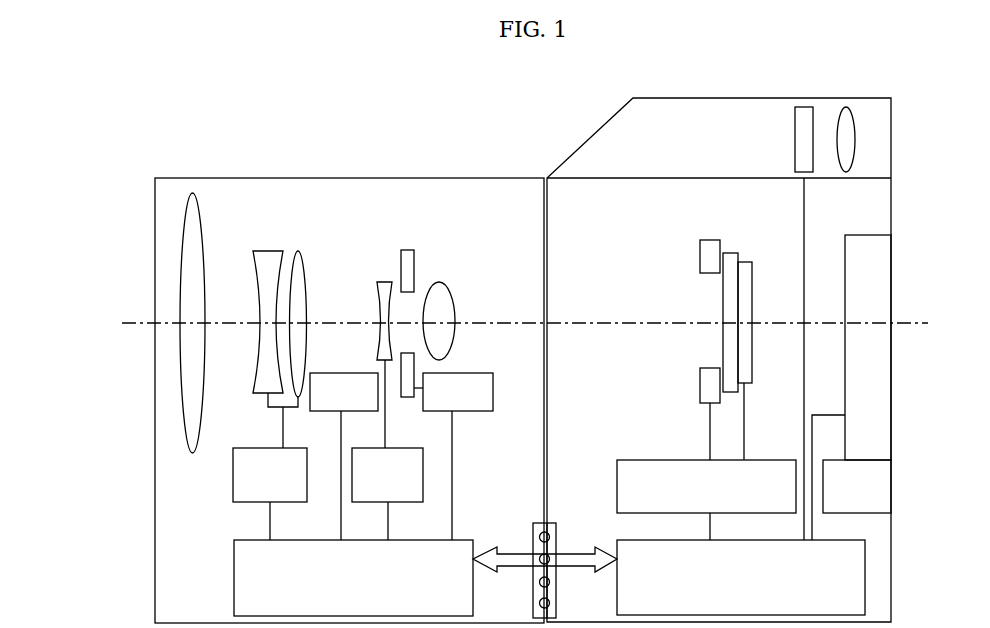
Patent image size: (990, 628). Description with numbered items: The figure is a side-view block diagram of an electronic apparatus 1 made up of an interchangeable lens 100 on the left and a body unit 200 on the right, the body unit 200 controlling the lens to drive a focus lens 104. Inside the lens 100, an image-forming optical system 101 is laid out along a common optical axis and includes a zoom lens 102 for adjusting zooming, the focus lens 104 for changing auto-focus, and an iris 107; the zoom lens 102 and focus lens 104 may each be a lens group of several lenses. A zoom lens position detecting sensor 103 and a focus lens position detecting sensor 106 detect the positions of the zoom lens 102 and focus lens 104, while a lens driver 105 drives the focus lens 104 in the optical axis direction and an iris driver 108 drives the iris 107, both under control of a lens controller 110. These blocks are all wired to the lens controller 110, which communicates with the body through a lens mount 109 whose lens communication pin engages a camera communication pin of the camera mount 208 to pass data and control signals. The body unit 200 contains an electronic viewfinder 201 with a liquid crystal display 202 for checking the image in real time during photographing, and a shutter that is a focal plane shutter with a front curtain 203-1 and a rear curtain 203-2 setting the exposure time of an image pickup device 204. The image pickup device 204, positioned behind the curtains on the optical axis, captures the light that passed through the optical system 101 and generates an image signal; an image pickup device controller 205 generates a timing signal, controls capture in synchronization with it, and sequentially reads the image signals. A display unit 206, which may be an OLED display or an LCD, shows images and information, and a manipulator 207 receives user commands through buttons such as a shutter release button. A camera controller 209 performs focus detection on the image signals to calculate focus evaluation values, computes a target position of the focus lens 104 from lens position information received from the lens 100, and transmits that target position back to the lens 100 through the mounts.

The electronic apparatus 1 is at (490, 86).
The interchangeable lens 100 is at (379, 173).
The image-forming optical system 101 is at (508, 207).
The zoom lens 102 is at (268, 251).
The zoom lens position detecting sensor 103 is at (293, 447).
The focus lens 104 is at (385, 282).
The lens driver 105 is at (346, 373).
The focus lens position detecting sensor 106 is at (398, 447).
The iris 107 is at (407, 250).
The iris driver 108 is at (476, 373).
The lens mount 109 is at (537, 523).
The lens controller 110 is at (234, 578).
The body unit 200 is at (898, 125).
The electronic viewfinder 201 is at (692, 132).
The liquid crystal display 202 is at (803, 107).
The front curtain 203-1 is at (700, 383).
The rear curtain 203-2 is at (700, 253).
The image pickup device 204 is at (731, 253).
The image pickup device controller 205 is at (670, 460).
The display unit 206 is at (872, 235).
The manipulator 207 is at (872, 460).
The camera mount 208 is at (552, 523).
The camera controller 209 is at (865, 578).